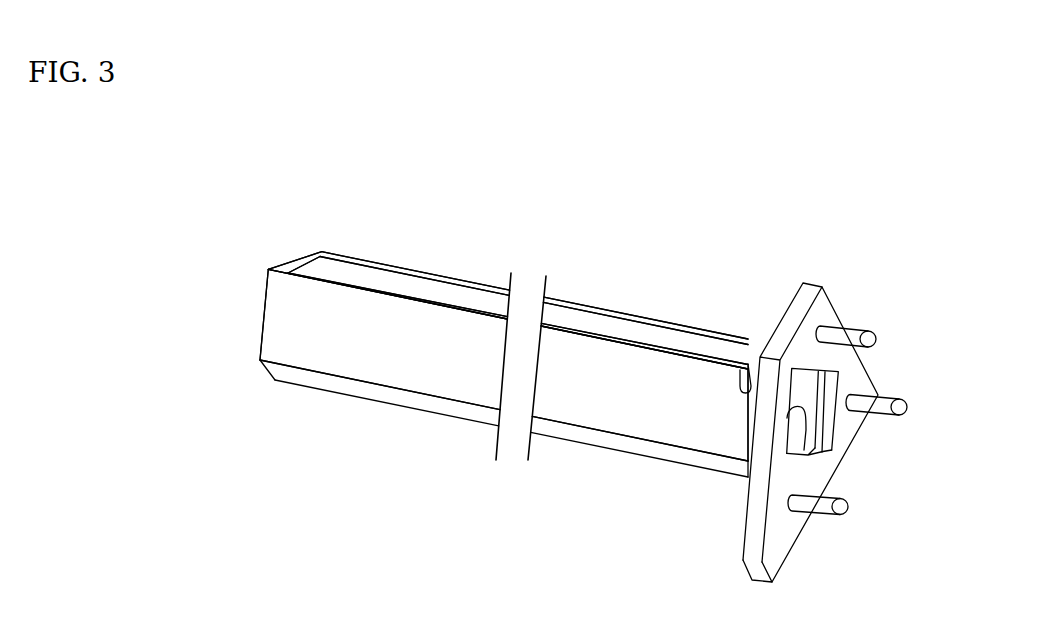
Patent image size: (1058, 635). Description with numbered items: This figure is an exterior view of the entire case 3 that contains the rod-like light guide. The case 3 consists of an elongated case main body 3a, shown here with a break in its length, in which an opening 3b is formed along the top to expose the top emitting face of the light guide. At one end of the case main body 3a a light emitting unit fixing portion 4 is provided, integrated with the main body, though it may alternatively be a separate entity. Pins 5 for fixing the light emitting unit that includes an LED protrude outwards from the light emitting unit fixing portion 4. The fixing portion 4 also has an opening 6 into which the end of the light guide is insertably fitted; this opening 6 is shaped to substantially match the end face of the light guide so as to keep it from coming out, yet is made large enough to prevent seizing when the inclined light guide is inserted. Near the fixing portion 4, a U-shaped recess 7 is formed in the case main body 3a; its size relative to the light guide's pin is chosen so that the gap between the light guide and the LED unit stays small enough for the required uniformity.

The case 3 is at (629, 274).
The case main body 3a is at (407, 367).
The opening 3b is at (415, 290).
The light emitting unit fixing portion 4 is at (836, 444).
The pins 5 is at (854, 331).
The opening 6 is at (787, 440).
The recess 7 is at (740, 380).